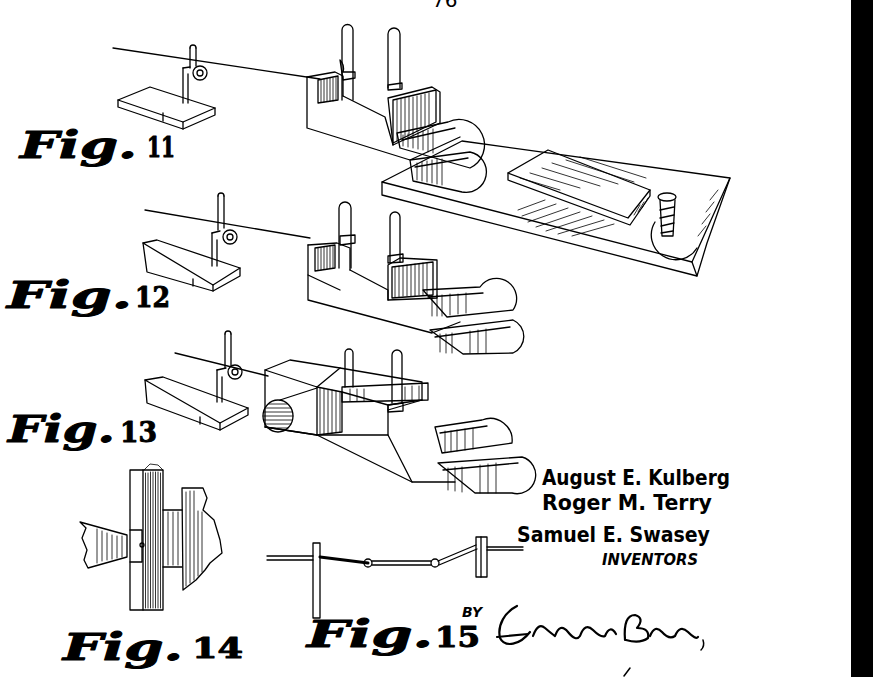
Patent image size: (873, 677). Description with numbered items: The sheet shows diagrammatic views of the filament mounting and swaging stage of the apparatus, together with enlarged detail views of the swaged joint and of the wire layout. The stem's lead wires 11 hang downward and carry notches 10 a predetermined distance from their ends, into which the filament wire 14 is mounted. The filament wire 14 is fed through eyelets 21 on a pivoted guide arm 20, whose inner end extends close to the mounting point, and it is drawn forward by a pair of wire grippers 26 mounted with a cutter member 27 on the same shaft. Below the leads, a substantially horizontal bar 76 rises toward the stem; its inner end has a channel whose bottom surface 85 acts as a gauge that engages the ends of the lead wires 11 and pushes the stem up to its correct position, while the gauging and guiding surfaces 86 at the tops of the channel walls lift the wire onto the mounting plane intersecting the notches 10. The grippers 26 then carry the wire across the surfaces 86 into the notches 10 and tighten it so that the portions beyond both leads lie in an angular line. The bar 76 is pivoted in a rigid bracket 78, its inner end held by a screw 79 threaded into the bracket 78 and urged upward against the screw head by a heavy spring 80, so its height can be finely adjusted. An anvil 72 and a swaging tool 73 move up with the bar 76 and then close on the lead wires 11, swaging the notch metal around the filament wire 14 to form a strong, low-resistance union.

In FIG. 11, the notches 10 is at (343, 70).
In FIG. 12, the notches 10 is at (342, 242).
In FIG. 13, the notches 10 is at (392, 408).
In FIG. 11, the lead wires 11 is at (352, 48).
In FIG. 12, the lead wires 11 is at (352, 228).
In FIG. 13, the lead wires 11 is at (345, 352).
In FIG. 14, the lead wires 11 is at (140, 498).
In FIG. 15, the lead wires 11 is at (435, 565).
In FIG. 11, the filament wire 14 is at (216, 47).
In FIG. 12, the filament wire 14 is at (227, 213).
In FIG. 13, the filament wire 14 is at (221, 352).
In FIG. 14, the filament wire 14 is at (140, 546).
In FIG. 15, the filament wire 14 is at (336, 558).
In FIG. 11, the guide arm 20 is at (200, 109).
In FIG. 12, the guide arm 20 is at (215, 285).
In FIG. 13, the guide arm 20 is at (218, 405).
In FIG. 11, the eyelets 21 is at (200, 62).
In FIG. 12, the eyelets 21 is at (228, 210).
In FIG. 13, the eyelets 21 is at (236, 354).
In FIG. 15, the eyelets 21 is at (313, 548).
In FIG. 11, the wire grippers 26 is at (460, 133).
In FIG. 12, the wire grippers 26 is at (480, 310).
In FIG. 13, the wire grippers 26 is at (448, 433).
In FIG. 15, the wire grippers 26 is at (473, 563).
In FIG. 11, the cutter member 27 is at (460, 188).
In FIG. 12, the cutter member 27 is at (488, 347).
In FIG. 13, the cutter member 27 is at (462, 487).
In FIG. 15, the cutter member 27 is at (487, 577).
In FIG. 13, the anvil 72 is at (425, 395).
In FIG. 14, the anvil 72 is at (203, 548).
In FIG. 13, the swaging tool 73 is at (318, 434).
In FIG. 14, the swaging tool 73 is at (93, 547).
In FIG. 11, the bar 76 is at (497, 140).
In FIG. 12, the bar 76 is at (323, 287).
In FIG. 13, the bar 76 is at (352, 450).
In FIG. 11, the bracket 78 is at (583, 243).
In FIG. 11, the screw 79 is at (667, 193).
In FIG. 11, the spring 80 is at (653, 223).
In FIG. 11, the bottom surface 85 is at (362, 107).
In FIG. 12, the bottom surface 85 is at (362, 275).
In FIG. 13, the bottom surface 85 is at (371, 423).
In FIG. 11, the gauging and guiding surfaces 86 is at (320, 78).
In FIG. 12, the gauging and guiding surfaces 86 is at (322, 242).